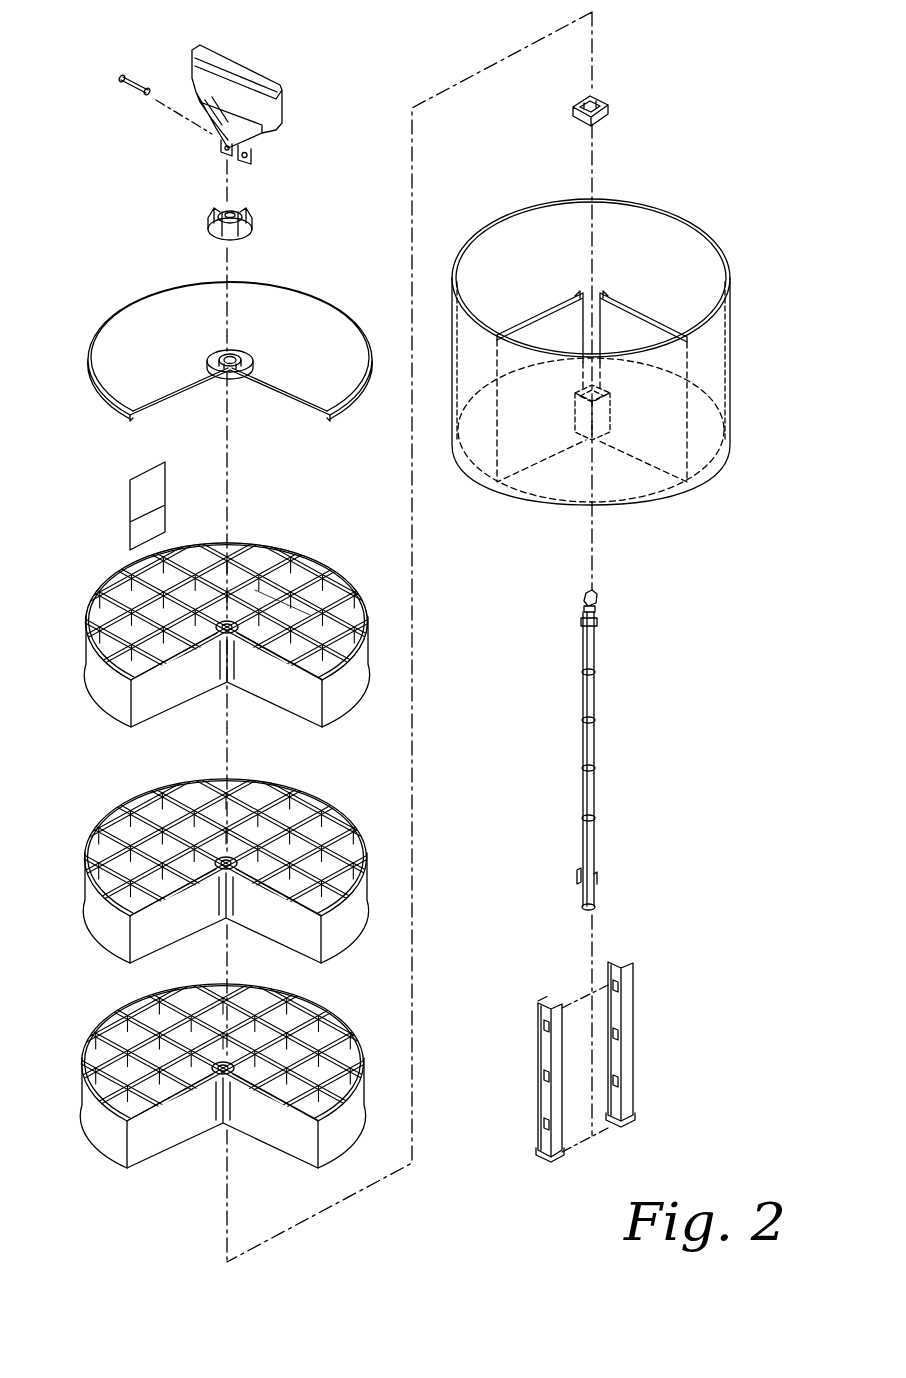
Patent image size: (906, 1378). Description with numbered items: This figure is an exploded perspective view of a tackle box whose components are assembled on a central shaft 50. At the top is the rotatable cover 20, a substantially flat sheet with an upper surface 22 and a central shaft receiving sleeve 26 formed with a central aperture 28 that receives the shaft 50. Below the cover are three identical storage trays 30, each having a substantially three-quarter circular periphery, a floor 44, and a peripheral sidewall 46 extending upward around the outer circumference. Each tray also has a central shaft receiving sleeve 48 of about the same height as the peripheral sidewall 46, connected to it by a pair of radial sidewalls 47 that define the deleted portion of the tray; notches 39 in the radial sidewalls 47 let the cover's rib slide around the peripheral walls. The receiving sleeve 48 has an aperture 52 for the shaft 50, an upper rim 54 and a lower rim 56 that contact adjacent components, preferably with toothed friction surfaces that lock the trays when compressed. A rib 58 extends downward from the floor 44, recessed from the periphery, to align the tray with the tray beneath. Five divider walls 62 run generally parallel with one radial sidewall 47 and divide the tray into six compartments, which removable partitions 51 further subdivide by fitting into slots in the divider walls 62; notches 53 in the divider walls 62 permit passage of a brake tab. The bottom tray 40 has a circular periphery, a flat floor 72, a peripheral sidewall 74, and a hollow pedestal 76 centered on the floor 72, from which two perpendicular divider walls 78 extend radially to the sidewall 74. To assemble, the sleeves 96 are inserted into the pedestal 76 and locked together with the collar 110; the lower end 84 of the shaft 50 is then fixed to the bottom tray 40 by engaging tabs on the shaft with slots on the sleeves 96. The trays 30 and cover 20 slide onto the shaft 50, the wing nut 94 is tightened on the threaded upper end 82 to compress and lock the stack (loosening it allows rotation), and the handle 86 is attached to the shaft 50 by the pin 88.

The rotatable cover 20 is at (229, 334).
The upper surface 22 is at (318, 383).
The central shaft receiving sleeve 26 is at (242, 357).
The central aperture 28 is at (229, 358).
The storage tray 30 is at (210, 814).
The notches 39 is at (135, 685).
The bottom tray 40 is at (614, 341).
The floor 44 is at (308, 720).
The peripheral sidewall 46 is at (338, 568).
The radial sidewalls 47 is at (157, 668).
The central shaft receiving sleeve 48 is at (227, 653).
The central shaft 50 is at (592, 694).
The removable partitions 51 is at (140, 494).
The aperture 52 is at (224, 617).
The notches 53 is at (103, 582).
The upper rim 54 is at (232, 617).
The lower rim 56 is at (226, 676).
The rib 58 is at (130, 727).
The divider walls 62 is at (283, 575).
The floor 72 is at (544, 493).
The peripheral sidewall 74 is at (690, 224).
The hollow pedestal 76 is at (605, 412).
The divider walls 78 is at (530, 315).
The upper end 82 is at (612, 580).
The lower end 84 is at (608, 813).
The handle 86 is at (238, 68).
The pin 88 is at (143, 80).
The wing nut 94 is at (253, 222).
The sleeves 96 is at (630, 1005).
The collar 110 is at (612, 110).